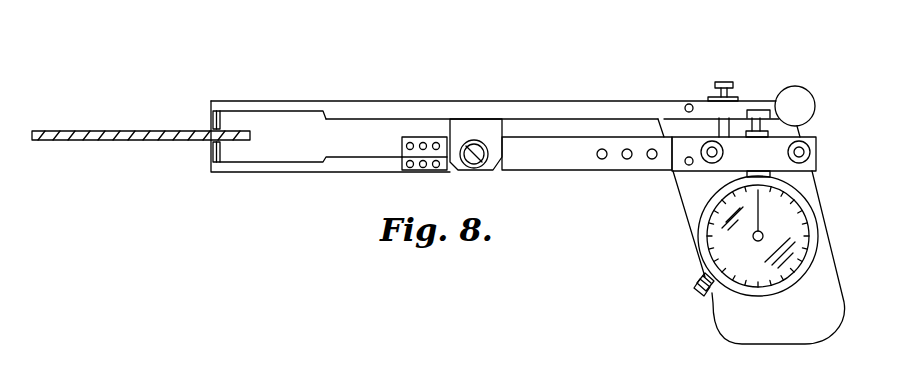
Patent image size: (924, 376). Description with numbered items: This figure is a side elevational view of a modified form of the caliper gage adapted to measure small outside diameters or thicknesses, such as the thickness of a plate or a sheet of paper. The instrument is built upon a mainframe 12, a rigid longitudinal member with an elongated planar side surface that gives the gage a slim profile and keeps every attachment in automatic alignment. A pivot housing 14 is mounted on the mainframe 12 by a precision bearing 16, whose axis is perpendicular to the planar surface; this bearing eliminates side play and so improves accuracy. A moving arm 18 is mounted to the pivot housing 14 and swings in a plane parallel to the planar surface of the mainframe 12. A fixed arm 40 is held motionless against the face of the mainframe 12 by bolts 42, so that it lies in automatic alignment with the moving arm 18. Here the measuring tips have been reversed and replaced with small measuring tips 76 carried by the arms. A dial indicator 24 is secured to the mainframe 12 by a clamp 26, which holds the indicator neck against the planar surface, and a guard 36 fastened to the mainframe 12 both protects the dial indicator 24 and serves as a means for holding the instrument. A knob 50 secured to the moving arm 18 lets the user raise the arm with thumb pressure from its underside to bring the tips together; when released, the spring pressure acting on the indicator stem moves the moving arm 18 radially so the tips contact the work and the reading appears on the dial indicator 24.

The mainframe 12 is at (567, 172).
The pivot housing 14 is at (489, 164).
The precision bearing 16 is at (463, 163).
The moving arm 18 is at (380, 101).
The dial indicator 24 is at (822, 260).
The clamp 26 is at (817, 137).
The guard 36 is at (843, 319).
The fixed arm 40 is at (305, 173).
The bolts 42 is at (405, 173).
The knob 50 is at (812, 93).
The small measuring tips 76 is at (211, 120).